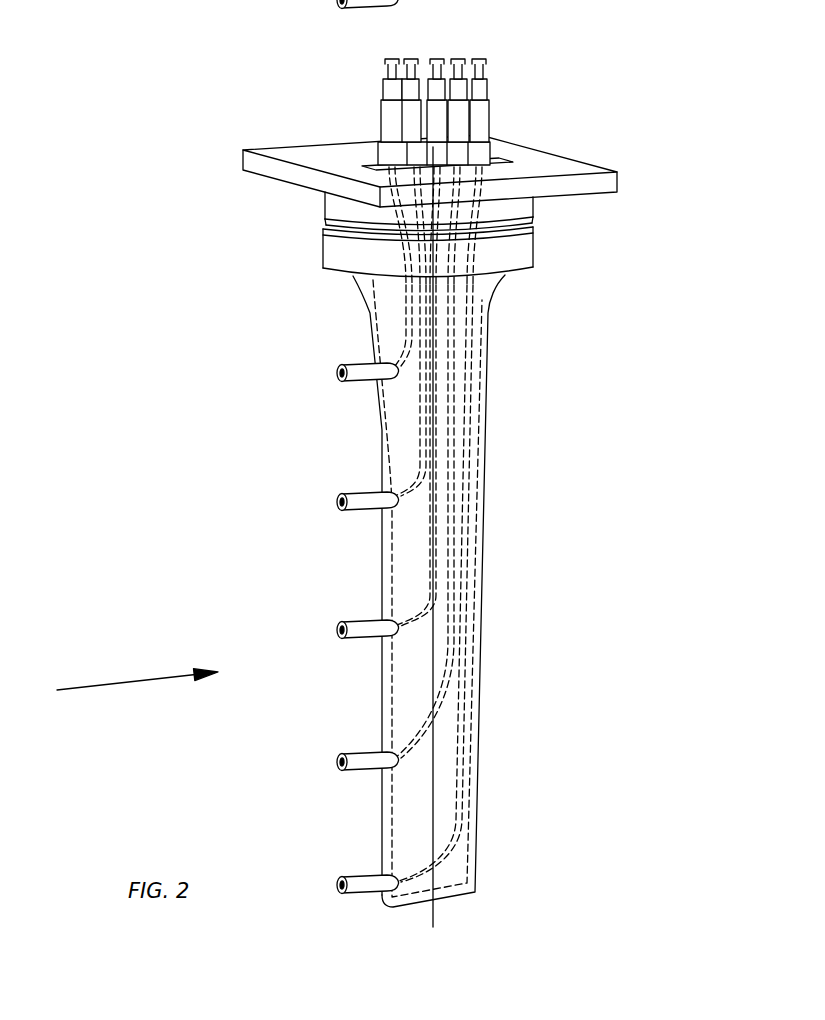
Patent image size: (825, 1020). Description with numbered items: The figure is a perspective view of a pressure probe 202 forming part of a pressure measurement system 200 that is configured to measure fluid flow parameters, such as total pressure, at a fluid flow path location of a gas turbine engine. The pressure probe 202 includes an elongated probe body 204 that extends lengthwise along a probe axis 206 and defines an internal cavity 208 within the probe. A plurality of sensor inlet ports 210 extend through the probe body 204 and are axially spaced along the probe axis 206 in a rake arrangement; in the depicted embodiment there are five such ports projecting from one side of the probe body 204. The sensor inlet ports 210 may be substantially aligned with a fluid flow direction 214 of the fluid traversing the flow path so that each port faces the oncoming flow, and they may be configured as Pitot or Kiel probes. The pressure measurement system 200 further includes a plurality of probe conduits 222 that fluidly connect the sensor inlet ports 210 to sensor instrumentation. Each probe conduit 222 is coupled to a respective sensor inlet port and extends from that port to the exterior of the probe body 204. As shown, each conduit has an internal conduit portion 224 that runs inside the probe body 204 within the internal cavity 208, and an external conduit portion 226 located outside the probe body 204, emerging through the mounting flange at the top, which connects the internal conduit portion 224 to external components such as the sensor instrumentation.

The pressure measurement system 200 is at (515, 150).
The pressure probe 202 is at (562, 353).
The probe body 204 is at (370, 323).
The probe axis 206 is at (435, 918).
The internal cavity 208 is at (390, 573).
The sensor inlet ports 210 is at (322, 490).
The fluid flow direction 214 is at (138, 678).
The probe conduits 222 is at (490, 213).
The internal conduit portion 224 is at (495, 505).
The external conduit portion 226 is at (505, 86).